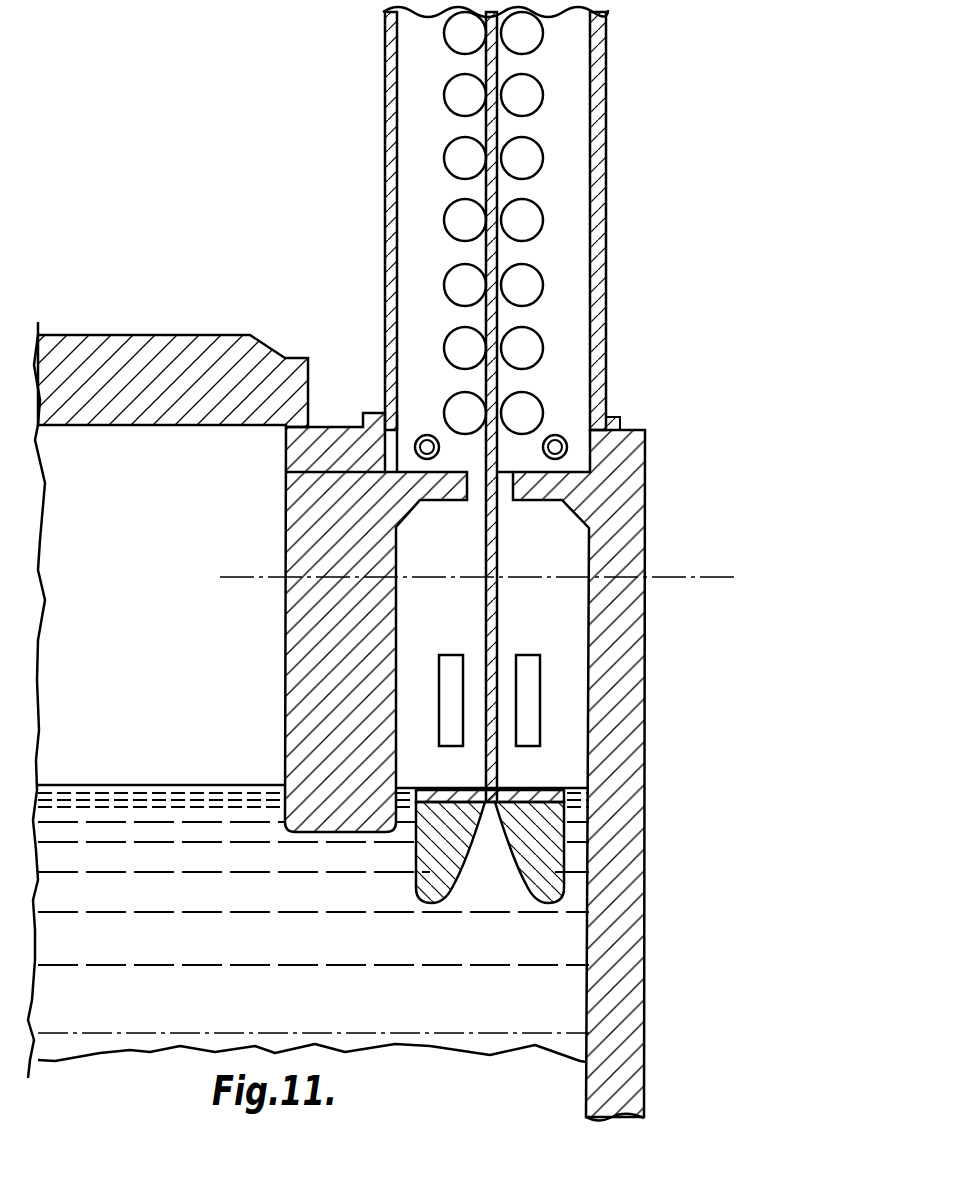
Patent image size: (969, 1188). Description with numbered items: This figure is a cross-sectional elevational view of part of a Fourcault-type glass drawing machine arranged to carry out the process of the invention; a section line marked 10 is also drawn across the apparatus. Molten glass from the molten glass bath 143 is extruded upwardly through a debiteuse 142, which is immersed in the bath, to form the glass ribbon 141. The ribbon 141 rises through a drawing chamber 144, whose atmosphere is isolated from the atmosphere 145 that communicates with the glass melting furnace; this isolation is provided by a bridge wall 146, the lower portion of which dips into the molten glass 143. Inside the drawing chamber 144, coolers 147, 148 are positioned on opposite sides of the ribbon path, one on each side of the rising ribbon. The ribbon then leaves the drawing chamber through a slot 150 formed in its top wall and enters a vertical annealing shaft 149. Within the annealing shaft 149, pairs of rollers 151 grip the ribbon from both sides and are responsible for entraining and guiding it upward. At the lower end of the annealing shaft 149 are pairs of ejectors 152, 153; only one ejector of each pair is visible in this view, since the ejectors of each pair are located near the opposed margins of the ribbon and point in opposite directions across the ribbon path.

The section line 10 is at (477, 566).
The glass ribbon 141 is at (486, 552).
The debiteuse 142 is at (535, 845).
The molten glass bath 143 is at (291, 949).
The drawing chamber 144 is at (562, 569).
The atmosphere 145 is at (126, 566).
The bridge wall 146 is at (356, 690).
The cooler 147 is at (527, 675).
The cooler 148 is at (455, 672).
The vertical annealing shaft 149 is at (616, 230).
The slot 150 is at (504, 483).
The pairs of rollers 151 is at (530, 33).
The ejector 152 is at (563, 437).
The ejector 153 is at (418, 437).